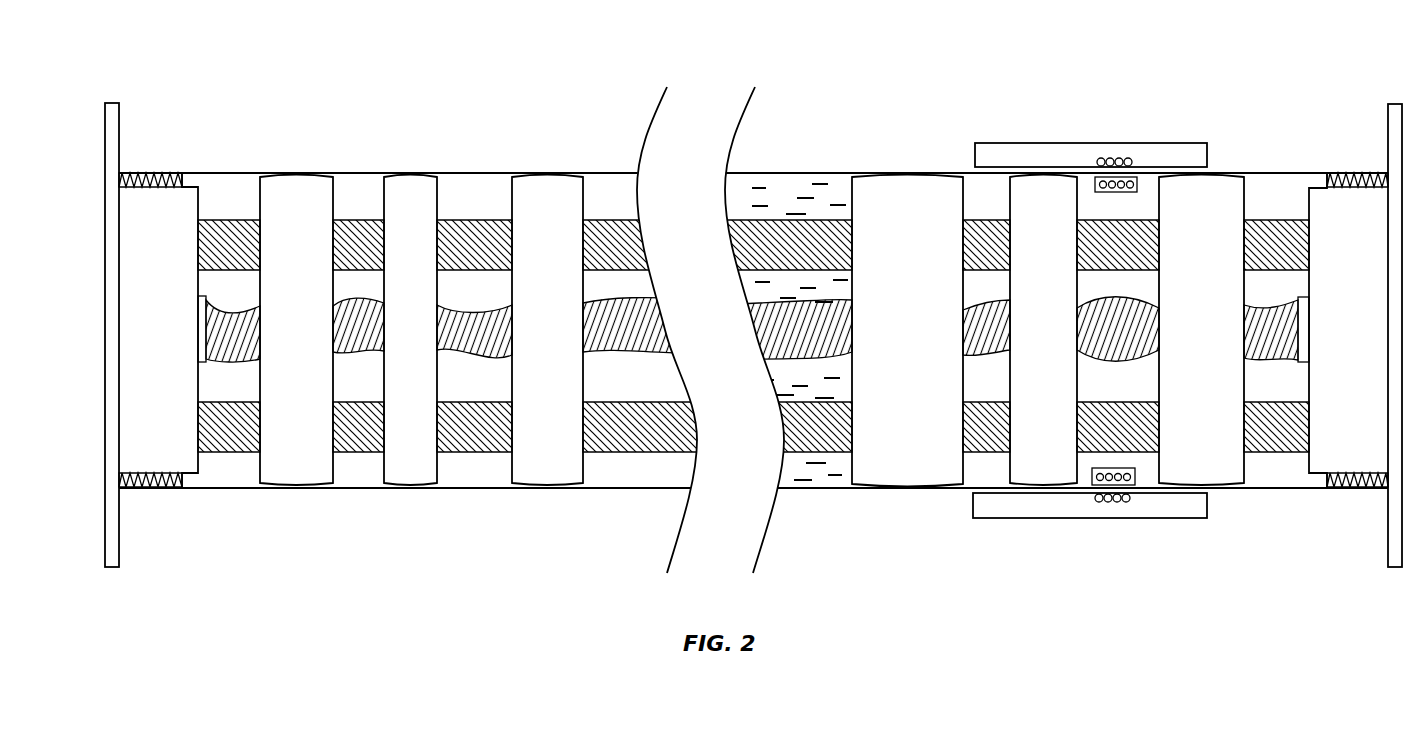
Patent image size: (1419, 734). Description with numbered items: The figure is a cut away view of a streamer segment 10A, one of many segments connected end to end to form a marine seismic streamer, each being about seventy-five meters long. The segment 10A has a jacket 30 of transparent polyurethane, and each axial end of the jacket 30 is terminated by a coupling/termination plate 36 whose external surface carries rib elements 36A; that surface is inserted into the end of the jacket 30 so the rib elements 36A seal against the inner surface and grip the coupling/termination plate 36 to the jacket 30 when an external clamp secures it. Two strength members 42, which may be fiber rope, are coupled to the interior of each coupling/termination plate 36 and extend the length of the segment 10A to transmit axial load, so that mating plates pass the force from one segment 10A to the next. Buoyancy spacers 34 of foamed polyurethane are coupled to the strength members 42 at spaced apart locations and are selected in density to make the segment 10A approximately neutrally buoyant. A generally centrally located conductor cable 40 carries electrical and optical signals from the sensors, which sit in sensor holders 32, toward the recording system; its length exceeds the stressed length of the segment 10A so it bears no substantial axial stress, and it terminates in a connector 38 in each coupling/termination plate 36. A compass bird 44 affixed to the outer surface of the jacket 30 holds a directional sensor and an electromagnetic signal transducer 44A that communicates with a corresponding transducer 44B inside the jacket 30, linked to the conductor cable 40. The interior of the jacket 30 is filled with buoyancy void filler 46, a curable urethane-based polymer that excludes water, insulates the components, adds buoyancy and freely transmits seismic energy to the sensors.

The streamer segment 10A is at (582, 66).
The jacket 30 is at (480, 170).
The sensor holders 32 is at (290, 180).
The buoyancy spacers 34 is at (545, 180).
The coupling/termination plate 36 is at (119, 443).
The rib elements 36A is at (156, 171).
The connector 38 is at (206, 296).
The conductor cable 40 is at (252, 360).
The strength members 42 is at (336, 220).
The compass bird 44 is at (1017, 143).
The electromagnetic signal transducer 44A is at (1116, 160).
The transducer 44B is at (1150, 180).
The buoyancy void filler 46 is at (794, 463).